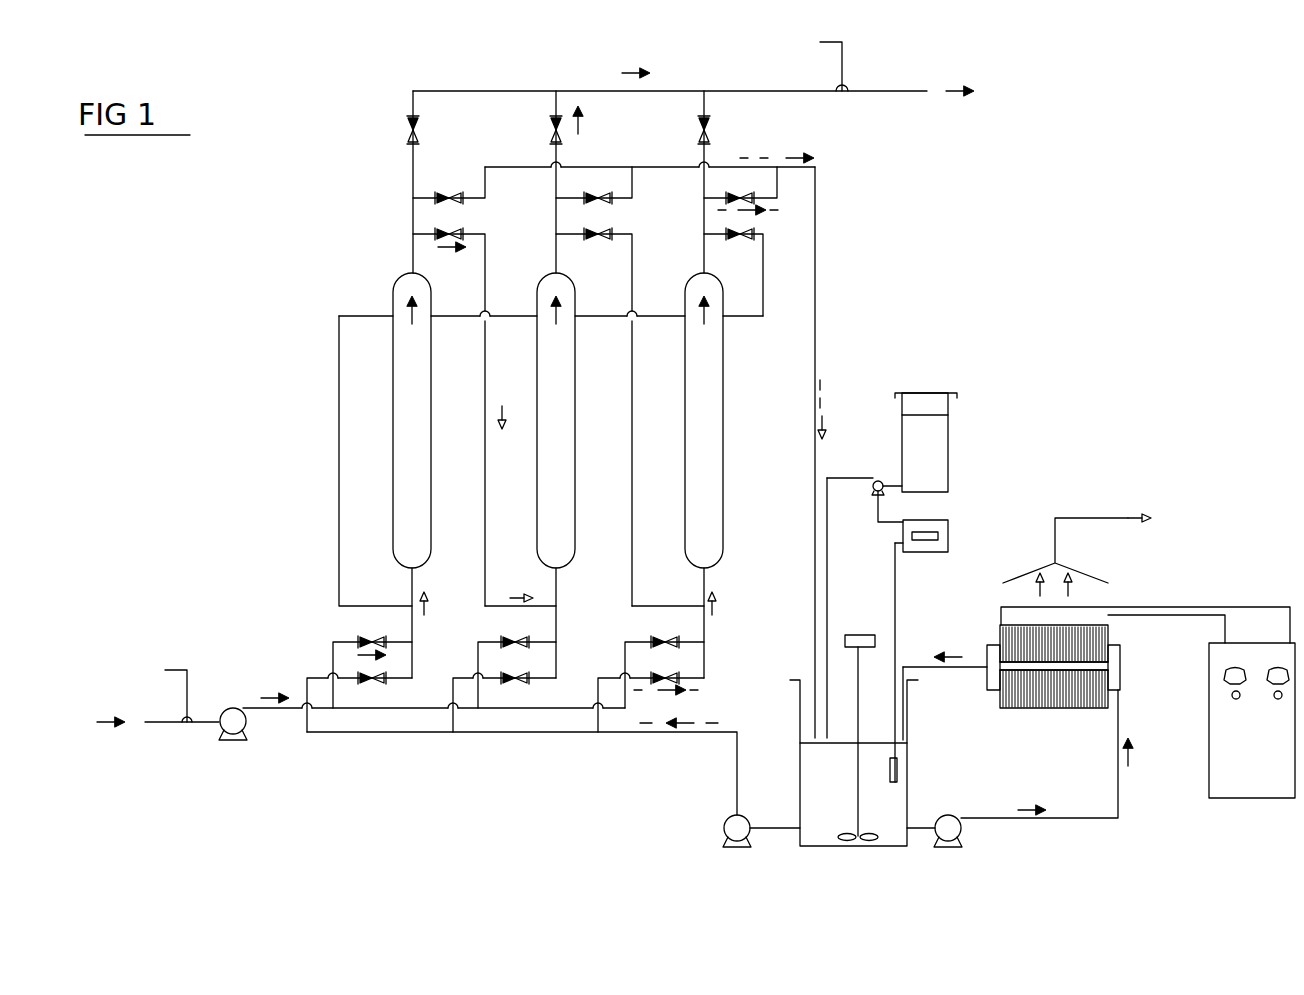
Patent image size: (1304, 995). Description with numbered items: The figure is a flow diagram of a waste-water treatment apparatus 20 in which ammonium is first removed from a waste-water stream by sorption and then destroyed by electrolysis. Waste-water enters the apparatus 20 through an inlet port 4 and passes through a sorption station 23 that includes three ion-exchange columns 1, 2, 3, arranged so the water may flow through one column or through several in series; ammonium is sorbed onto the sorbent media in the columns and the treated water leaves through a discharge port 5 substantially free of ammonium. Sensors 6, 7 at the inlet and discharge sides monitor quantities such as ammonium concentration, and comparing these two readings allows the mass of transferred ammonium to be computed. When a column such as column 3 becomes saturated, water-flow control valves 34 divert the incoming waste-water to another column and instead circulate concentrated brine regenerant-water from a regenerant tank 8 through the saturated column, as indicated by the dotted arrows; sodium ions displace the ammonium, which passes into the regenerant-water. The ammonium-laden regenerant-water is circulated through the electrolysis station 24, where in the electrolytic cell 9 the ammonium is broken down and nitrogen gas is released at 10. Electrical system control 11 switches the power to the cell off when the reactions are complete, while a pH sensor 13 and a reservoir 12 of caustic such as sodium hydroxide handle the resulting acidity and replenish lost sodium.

The ion-exchange column 1 is at (420, 462).
The ion-exchange column 2 is at (568, 458).
The ion-exchange column 3 is at (712, 495).
The inlet port 4 is at (106, 728).
The discharge port 5 is at (960, 82).
The sensor 6 is at (188, 662).
The sensor 7 is at (846, 46).
The regenerant tank 8 is at (815, 835).
The electrolytic cell 9 is at (1032, 712).
The nitrogen gas release 10 is at (1103, 515).
The electrical system control 11 is at (1247, 785).
The reservoir of caustic 12 is at (940, 448).
The pH sensor 13 is at (949, 542).
The apparatus 20 is at (330, 255).
The sorption station 23 is at (845, 290).
The electrolysis station 24 is at (1082, 355).
The water-flow control valves 34 is at (453, 190).